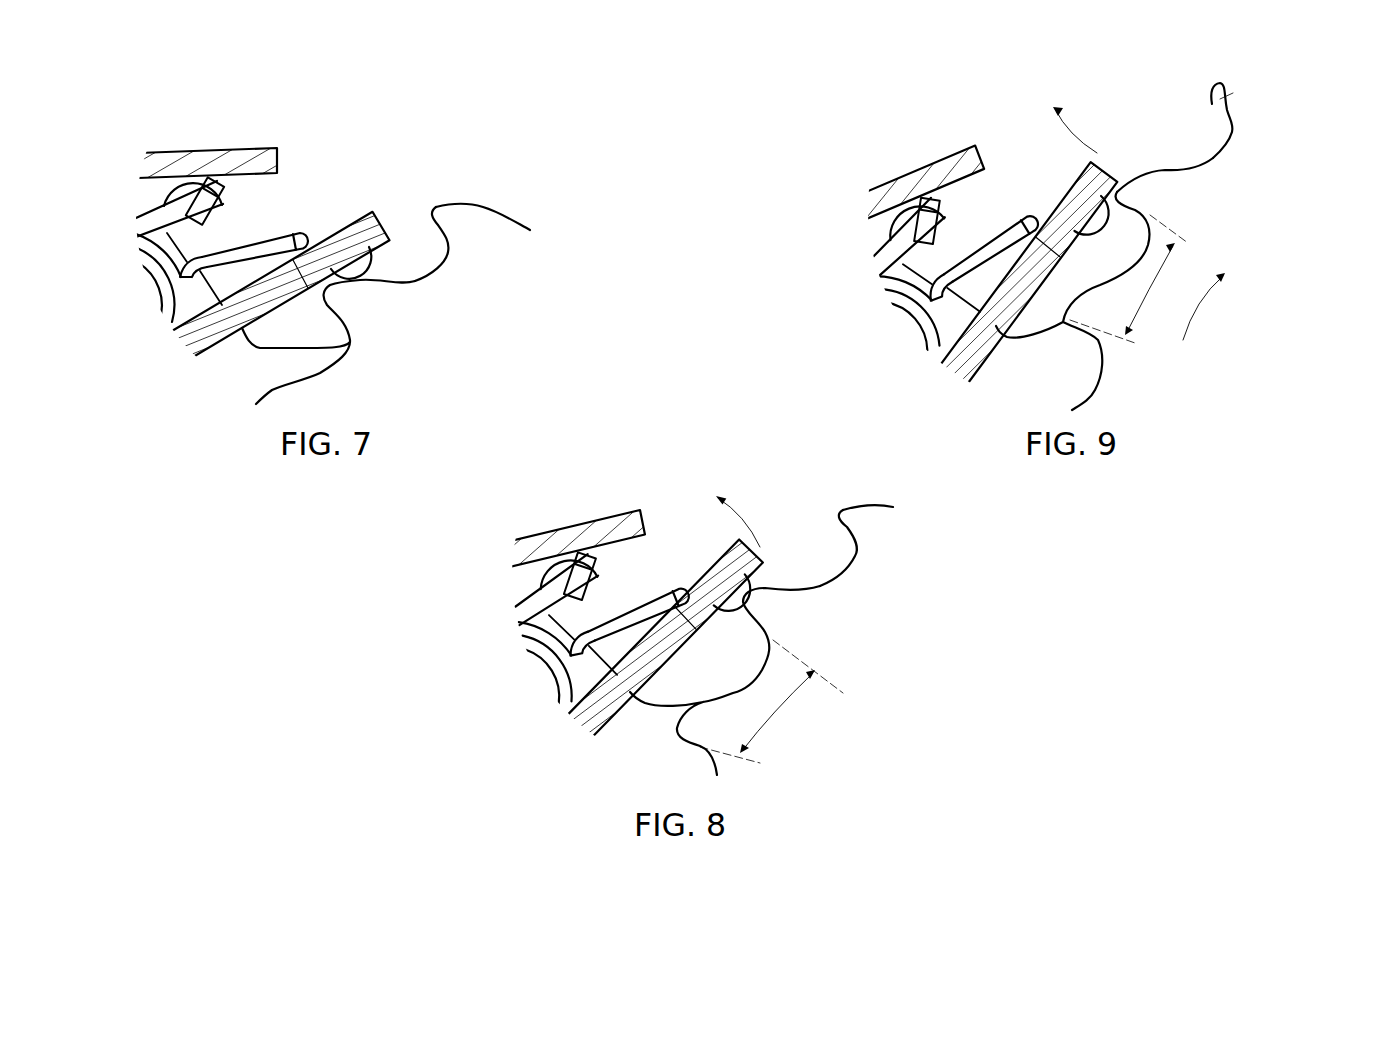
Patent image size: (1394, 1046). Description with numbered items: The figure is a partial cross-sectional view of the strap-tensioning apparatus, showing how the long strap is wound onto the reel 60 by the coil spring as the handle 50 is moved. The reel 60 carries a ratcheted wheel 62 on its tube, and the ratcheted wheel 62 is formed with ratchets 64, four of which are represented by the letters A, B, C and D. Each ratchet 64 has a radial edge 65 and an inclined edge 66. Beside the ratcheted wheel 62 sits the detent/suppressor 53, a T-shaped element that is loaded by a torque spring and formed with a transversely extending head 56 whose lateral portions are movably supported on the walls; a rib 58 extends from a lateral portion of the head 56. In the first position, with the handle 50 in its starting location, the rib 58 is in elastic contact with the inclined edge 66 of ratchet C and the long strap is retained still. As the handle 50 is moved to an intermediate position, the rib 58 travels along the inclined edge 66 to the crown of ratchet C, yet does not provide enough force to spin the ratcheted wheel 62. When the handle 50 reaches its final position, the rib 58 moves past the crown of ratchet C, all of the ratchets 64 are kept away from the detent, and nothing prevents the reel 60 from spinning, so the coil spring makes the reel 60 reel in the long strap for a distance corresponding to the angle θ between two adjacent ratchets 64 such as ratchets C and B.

In FIG. 7, the handle 50 is at (197, 155).
In FIG. 8, the handle 50 is at (577, 537).
In FIG. 9, the handle 50 is at (955, 172).
In FIG. 7, the detent/suppressor 53 is at (178, 343).
In FIG. 8, the detent/suppressor 53 is at (603, 703).
In FIG. 9, the detent/suppressor 53 is at (980, 343).
In FIG. 7, the head 56 is at (342, 228).
In FIG. 8, the head 56 is at (713, 567).
In FIG. 9, the head 56 is at (1080, 177).
In FIG. 7, the rib 58 is at (365, 268).
In FIG. 8, the rib 58 is at (742, 596).
In FIG. 9, the rib 58 is at (1097, 223).
In FIG. 7, the reel 60 is at (386, 253).
In FIG. 8, the reel 60 is at (761, 594).
In FIG. 9, the reel 60 is at (1124, 215).
In FIG. 7, the ratcheted wheel 62 is at (442, 253).
In FIG. 8, the ratcheted wheel 62 is at (813, 594).
In FIG. 9, the ratcheted wheel 62 is at (1174, 215).
In FIG. 7, the ratchet 64 is at (455, 188).
In FIG. 8, the ratchet 64 is at (809, 500).
In FIG. 9, the ratchet 64 is at (1138, 106).
In FIG. 7, the radial edge 65 is at (414, 210).
In FIG. 8, the radial edge 65 is at (843, 533).
In FIG. 9, the radial edge 65 is at (1127, 143).
In FIG. 7, the inclined edge 66 is at (497, 210).
In FIG. 8, the inclined edge 66 is at (857, 507).
In FIG. 9, the inclined edge 66 is at (1212, 105).